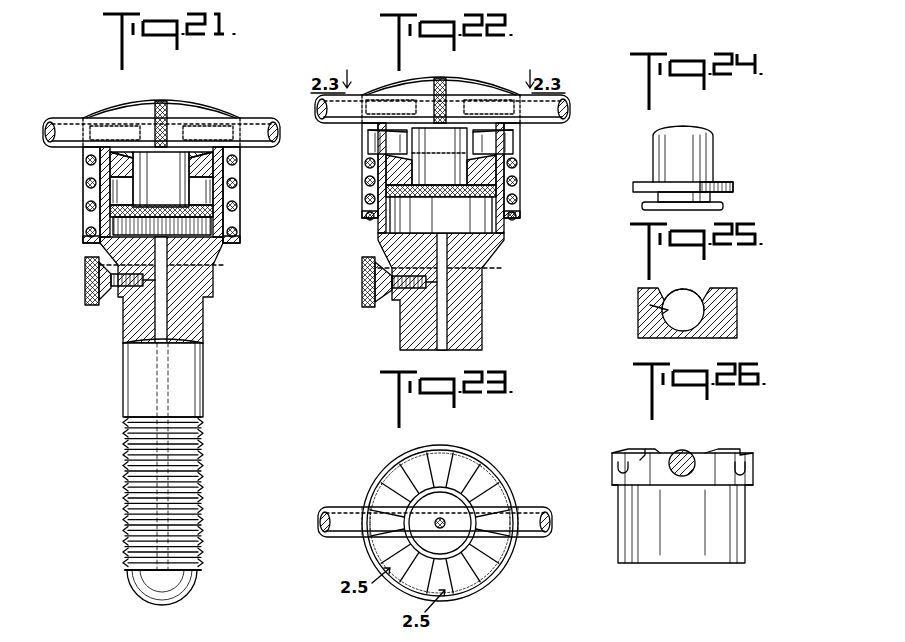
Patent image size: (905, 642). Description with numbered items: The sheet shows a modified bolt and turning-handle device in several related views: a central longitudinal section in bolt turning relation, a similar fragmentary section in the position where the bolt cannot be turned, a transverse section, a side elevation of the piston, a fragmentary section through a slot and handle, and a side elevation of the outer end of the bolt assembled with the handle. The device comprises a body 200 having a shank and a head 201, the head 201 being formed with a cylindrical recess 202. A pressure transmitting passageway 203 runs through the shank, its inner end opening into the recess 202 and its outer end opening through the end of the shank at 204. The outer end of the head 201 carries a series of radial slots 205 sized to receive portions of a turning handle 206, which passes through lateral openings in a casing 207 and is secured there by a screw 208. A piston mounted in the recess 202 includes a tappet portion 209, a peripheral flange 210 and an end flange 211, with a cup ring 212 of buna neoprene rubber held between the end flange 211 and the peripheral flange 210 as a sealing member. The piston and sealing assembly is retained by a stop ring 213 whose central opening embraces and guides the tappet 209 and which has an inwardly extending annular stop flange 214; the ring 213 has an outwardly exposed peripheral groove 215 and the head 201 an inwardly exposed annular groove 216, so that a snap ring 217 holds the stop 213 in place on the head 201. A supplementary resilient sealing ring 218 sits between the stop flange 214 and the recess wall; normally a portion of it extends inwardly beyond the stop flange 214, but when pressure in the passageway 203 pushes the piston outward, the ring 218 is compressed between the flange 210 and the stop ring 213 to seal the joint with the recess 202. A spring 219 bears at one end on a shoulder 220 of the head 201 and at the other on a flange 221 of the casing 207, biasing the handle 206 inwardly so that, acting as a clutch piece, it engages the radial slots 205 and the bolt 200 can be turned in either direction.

In FIG. 21, the body 200 is at (200, 368).
In FIG. 21, the head 201 is at (215, 253).
In FIG. 22, the head 201 is at (494, 260).
In FIG. 25, the head 201 is at (735, 316).
In FIG. 26, the head 201 is at (733, 515).
In FIG. 21, the cylindrical recess 202 is at (205, 192).
In FIG. 22, the cylindrical recess 202 is at (398, 222).
In FIG. 21, the pressure transmitting passageway 203 is at (168, 318).
In FIG. 22, the pressure transmitting passageway 203 is at (447, 323).
In FIG. 21, the outer end opening of the shank 204 is at (165, 603).
In FIG. 22, the radial slots 205 is at (375, 146).
In FIG. 23, the radial slots 205 is at (410, 480).
In FIG. 25, the radial slots 205 is at (660, 316).
In FIG. 26, the radial slots 205 is at (743, 460).
In FIG. 21, the turning handle 206 is at (57, 124).
In FIG. 22, the turning handle 206 is at (560, 113).
In FIG. 23, the turning handle 206 is at (330, 507).
In FIG. 25, the turning handle 206 is at (695, 292).
In FIG. 26, the turning handle 206 is at (678, 452).
In FIG. 22, the casing 207 is at (520, 143).
In FIG. 21, the screw 208 is at (165, 106).
In FIG. 22, the screw 208 is at (445, 102).
In FIG. 23, the screw 208 is at (445, 522).
In FIG. 21, the tappet portion 209 is at (165, 170).
In FIG. 22, the tappet portion 209 is at (433, 140).
In FIG. 24, the tappet portion 209 is at (692, 165).
In FIG. 24, the peripheral flange 210 is at (640, 182).
In FIG. 21, the end flange 211 is at (190, 240).
In FIG. 22, the end flange 211 is at (480, 208).
In FIG. 24, the end flange 211 is at (722, 208).
In FIG. 21, the cup ring 212 is at (200, 214).
In FIG. 21, the ring 213 is at (197, 163).
In FIG. 21, the annular stop flange 214 is at (118, 175).
In FIG. 21, the peripheral groove 215 is at (145, 152).
In FIG. 21, the annular groove 216 is at (228, 170).
In FIG. 21, the snap ring 217 is at (98, 170).
In FIG. 23, the snap ring 217 is at (455, 505).
In FIG. 21, the sealing ring 218 is at (213, 178).
In FIG. 21, the spring 219 is at (86, 230).
In FIG. 22, the spring 219 is at (516, 190).
In FIG. 22, the shoulder 220 is at (514, 163).
In FIG. 21, the flange 221 is at (90, 244).
In FIG. 22, the flange 221 is at (514, 214).